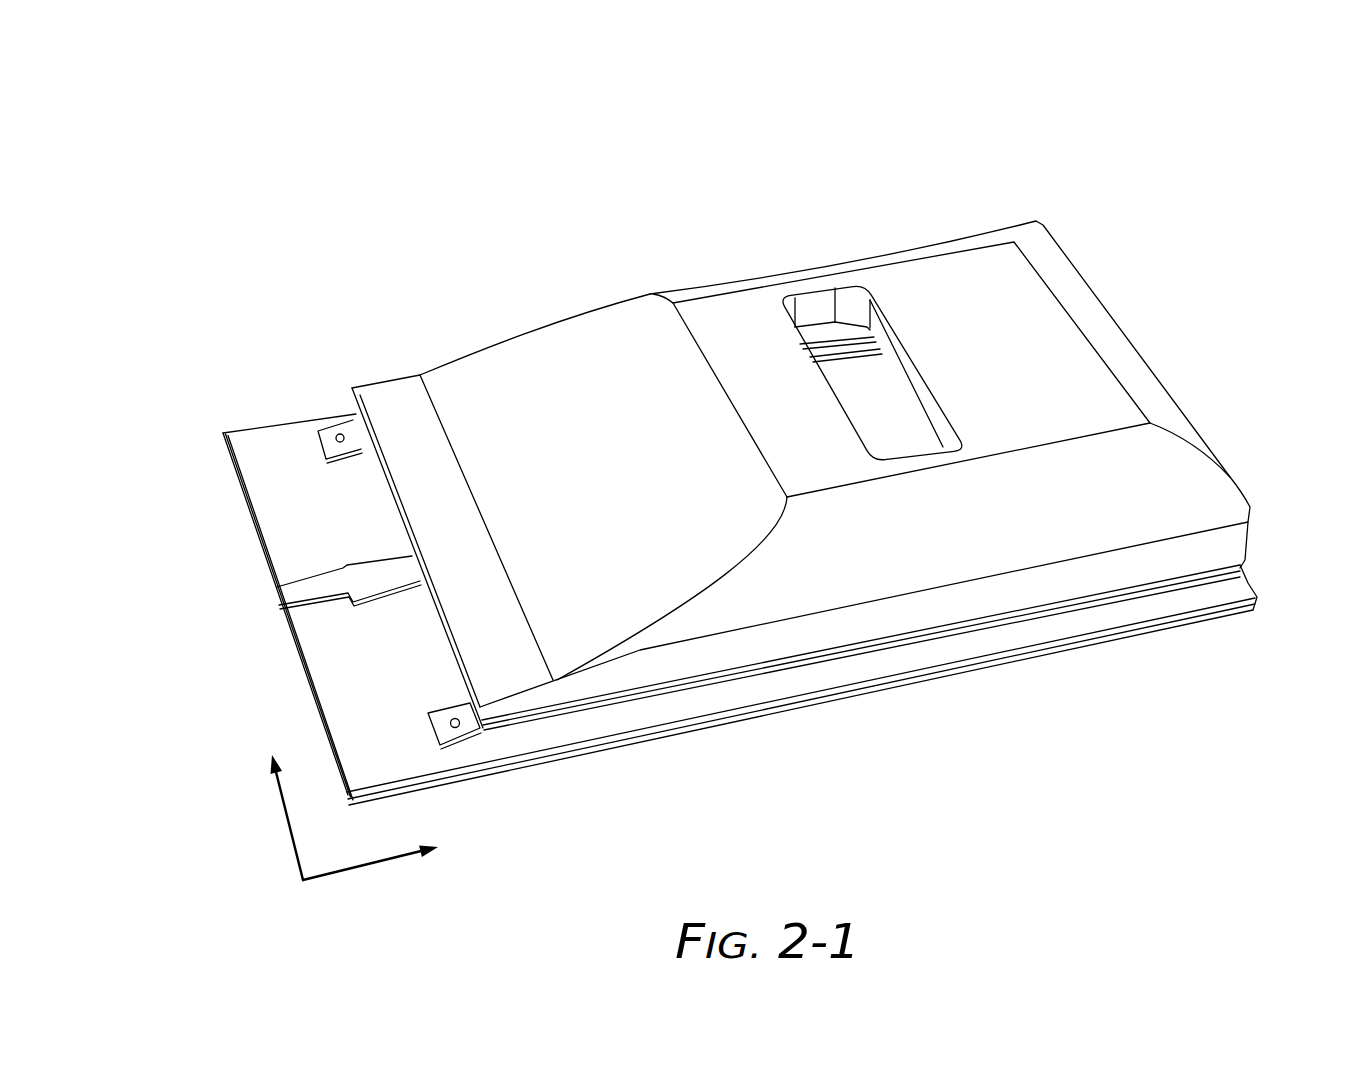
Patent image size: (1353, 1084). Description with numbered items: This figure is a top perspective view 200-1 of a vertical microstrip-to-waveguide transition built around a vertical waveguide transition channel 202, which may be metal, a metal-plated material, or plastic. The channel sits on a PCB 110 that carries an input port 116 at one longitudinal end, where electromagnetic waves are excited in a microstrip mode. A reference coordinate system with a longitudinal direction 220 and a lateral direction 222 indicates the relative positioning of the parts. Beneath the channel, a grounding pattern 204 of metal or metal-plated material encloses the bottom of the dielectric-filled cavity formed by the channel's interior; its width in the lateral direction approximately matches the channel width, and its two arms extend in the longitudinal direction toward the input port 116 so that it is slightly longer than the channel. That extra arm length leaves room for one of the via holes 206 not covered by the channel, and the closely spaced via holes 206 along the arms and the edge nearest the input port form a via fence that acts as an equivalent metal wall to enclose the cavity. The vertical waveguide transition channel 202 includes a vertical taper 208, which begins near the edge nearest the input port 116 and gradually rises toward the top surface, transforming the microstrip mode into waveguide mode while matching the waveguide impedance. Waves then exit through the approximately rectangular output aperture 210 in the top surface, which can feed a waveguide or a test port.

The top perspective view 200-1 is at (202, 78).
The PCB 110 is at (306, 496).
The input port 116 is at (363, 575).
The vertical waveguide transition channel 202 is at (826, 448).
The grounding pattern 204 is at (328, 437).
The via holes 206 is at (460, 726).
The vertical taper 208 is at (595, 418).
The output aperture 210 is at (885, 400).
The longitudinal direction 220 is at (383, 901).
The lateral direction 222 is at (233, 817).